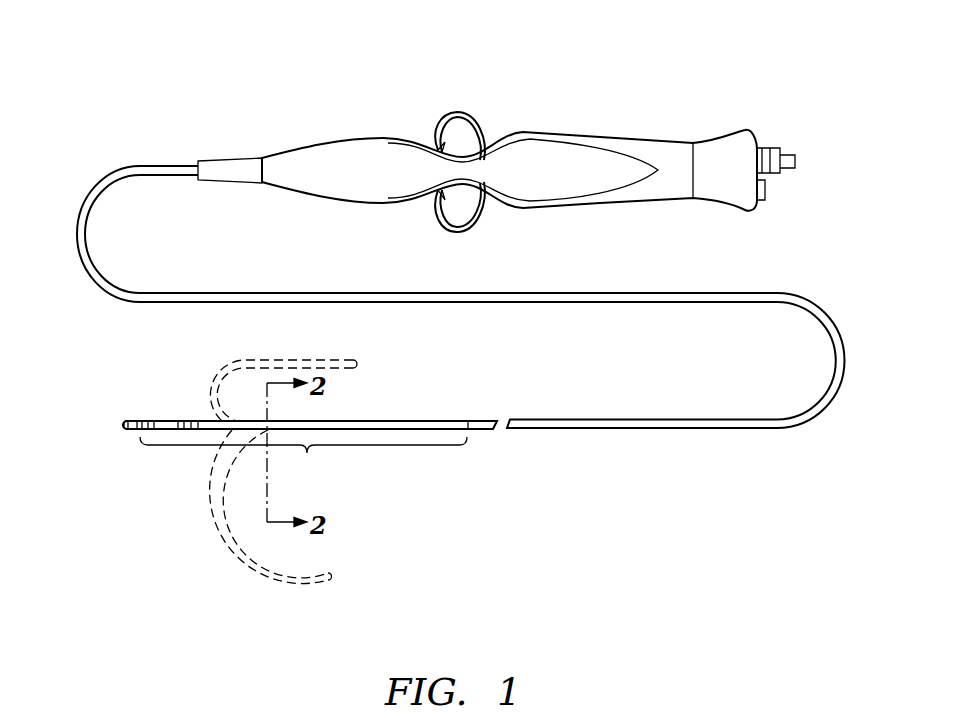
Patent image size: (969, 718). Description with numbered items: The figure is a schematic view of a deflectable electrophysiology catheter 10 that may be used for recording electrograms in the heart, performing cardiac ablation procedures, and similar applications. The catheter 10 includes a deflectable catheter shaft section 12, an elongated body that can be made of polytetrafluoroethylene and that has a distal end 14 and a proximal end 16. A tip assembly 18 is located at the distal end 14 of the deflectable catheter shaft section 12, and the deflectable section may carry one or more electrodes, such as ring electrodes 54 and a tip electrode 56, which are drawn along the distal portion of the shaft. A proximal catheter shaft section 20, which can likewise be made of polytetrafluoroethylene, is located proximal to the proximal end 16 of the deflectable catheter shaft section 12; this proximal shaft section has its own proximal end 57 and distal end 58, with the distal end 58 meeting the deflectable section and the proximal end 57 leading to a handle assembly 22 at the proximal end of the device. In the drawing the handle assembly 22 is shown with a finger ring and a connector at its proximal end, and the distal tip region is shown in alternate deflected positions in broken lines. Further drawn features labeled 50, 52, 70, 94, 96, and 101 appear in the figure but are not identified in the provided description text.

The deflectable electrophysiology catheter 10 is at (814, 192).
The deflectable catheter shaft section 12 is at (310, 454).
The distal end 14 is at (143, 420).
The proximal end 16 is at (468, 420).
The tip assembly 18 is at (110, 418).
The proximal catheter shaft section 20 is at (739, 437).
The handle assembly 22 is at (606, 122).
The tip electrode 50 is at (127, 420).
The ring electrode 52 is at (137, 420).
The ring electrodes 54 is at (190, 420).
The tip electrode 56 is at (125, 432).
The proximal end 57 is at (175, 165).
The distal end 58 is at (585, 419).
The intermediate section 70 is at (481, 431).
The cable connector 94 is at (210, 161).
The electrical connector 96 is at (757, 140).
The handle housing 101 is at (672, 188).